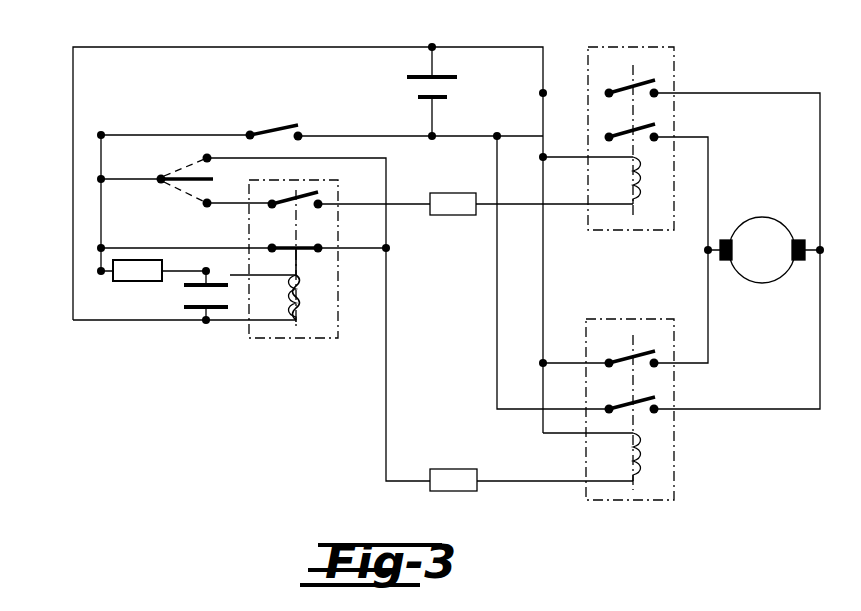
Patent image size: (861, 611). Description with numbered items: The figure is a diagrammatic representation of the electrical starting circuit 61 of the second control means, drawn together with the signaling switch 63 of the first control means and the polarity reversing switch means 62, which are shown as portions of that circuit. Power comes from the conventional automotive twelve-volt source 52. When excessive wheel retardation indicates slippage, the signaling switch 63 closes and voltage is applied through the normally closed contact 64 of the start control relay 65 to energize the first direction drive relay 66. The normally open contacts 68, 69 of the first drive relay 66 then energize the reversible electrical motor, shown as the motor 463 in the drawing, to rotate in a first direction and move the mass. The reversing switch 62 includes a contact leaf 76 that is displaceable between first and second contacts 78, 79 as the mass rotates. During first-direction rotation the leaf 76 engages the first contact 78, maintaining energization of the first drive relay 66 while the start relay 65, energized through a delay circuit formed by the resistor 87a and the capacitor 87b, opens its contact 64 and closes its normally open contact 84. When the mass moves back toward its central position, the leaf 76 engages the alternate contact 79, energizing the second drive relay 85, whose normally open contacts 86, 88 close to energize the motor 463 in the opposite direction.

The starting circuit 61 is at (338, 420).
The automotive 12 volt source 52 is at (410, 82).
The polarity reversing switch means 62 is at (170, 162).
The signaling switch 63 is at (290, 127).
The normally closed contact 64 is at (318, 244).
The start control relay 65 is at (290, 348).
The first direction drive relay 66 is at (620, 510).
The normally open contact 68 is at (655, 348).
The normally open contact 69 is at (656, 396).
The contact leaf 76 is at (165, 182).
The first contact 78 is at (212, 110).
The second contact 79 is at (207, 205).
The normally open contact 84 is at (318, 185).
The second drive relay 85 is at (633, 240).
The normally open contact 86 is at (656, 122).
The resistor 87a is at (113, 280).
The capacitor 87b is at (186, 290).
The normally open contact 88 is at (652, 78).
The motor 463 is at (790, 205).